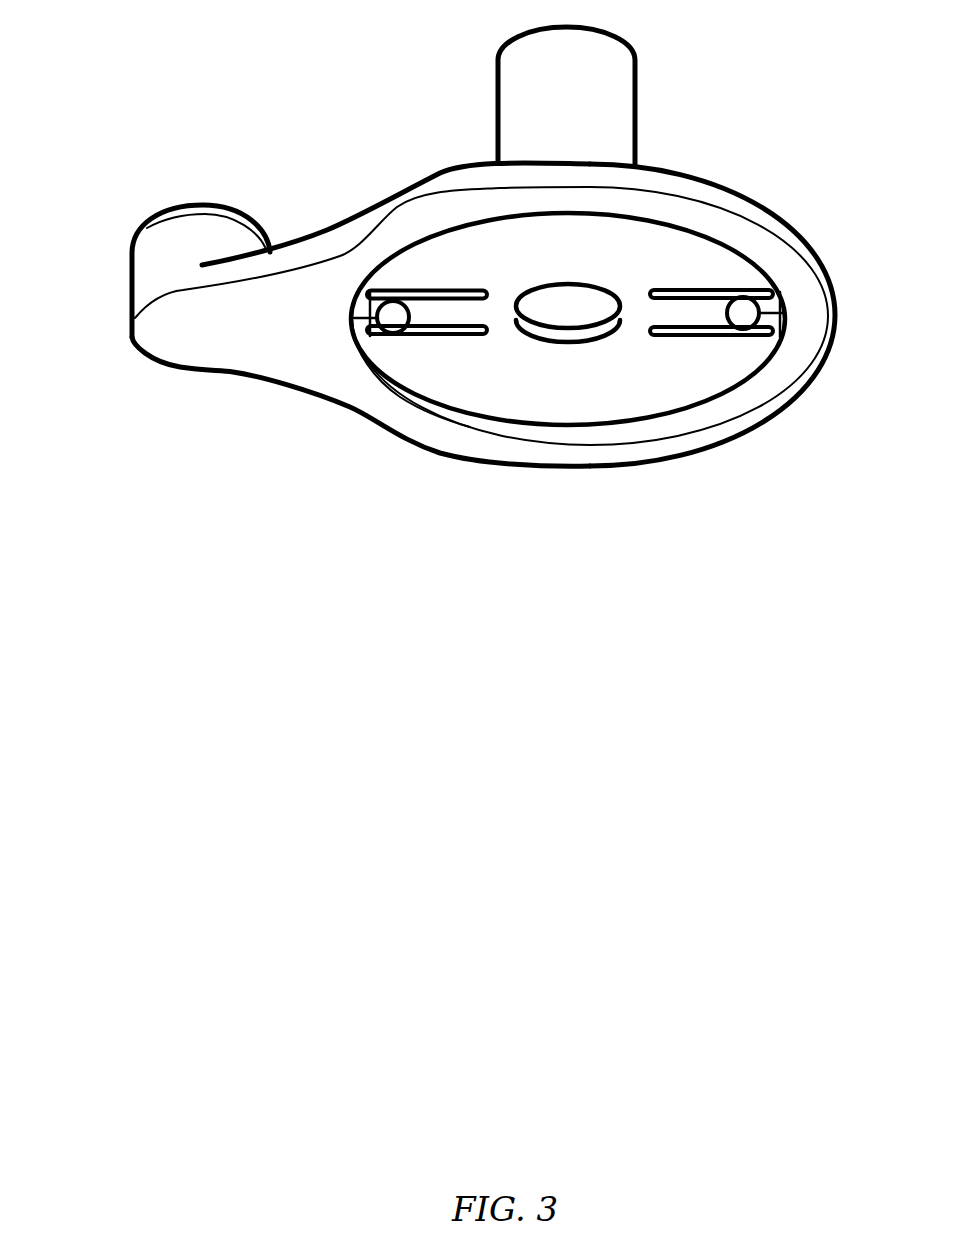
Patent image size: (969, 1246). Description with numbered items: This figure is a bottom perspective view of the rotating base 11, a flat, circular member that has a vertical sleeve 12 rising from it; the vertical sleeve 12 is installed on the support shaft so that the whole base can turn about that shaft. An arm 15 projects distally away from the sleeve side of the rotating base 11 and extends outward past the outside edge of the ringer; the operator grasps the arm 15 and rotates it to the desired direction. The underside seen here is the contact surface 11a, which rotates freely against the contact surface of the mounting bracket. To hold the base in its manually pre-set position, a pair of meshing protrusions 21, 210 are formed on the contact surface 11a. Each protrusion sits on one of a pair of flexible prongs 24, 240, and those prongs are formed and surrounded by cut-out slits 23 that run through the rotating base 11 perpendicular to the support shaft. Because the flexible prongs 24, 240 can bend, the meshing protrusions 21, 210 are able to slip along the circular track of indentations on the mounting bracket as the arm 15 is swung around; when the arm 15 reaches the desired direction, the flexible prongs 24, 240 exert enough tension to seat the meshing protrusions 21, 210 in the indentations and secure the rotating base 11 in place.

The rotating base 11 is at (233, 377).
The contact surface 11a is at (433, 373).
The vertical sleeve 12 is at (635, 60).
The arm 15 is at (131, 287).
The meshing protrusion 21 is at (747, 317).
The cut-out slits 23 is at (437, 296).
The flexible prong 24 is at (688, 318).
The meshing protrusion 210 is at (371, 330).
The flexible prong 240 is at (455, 317).